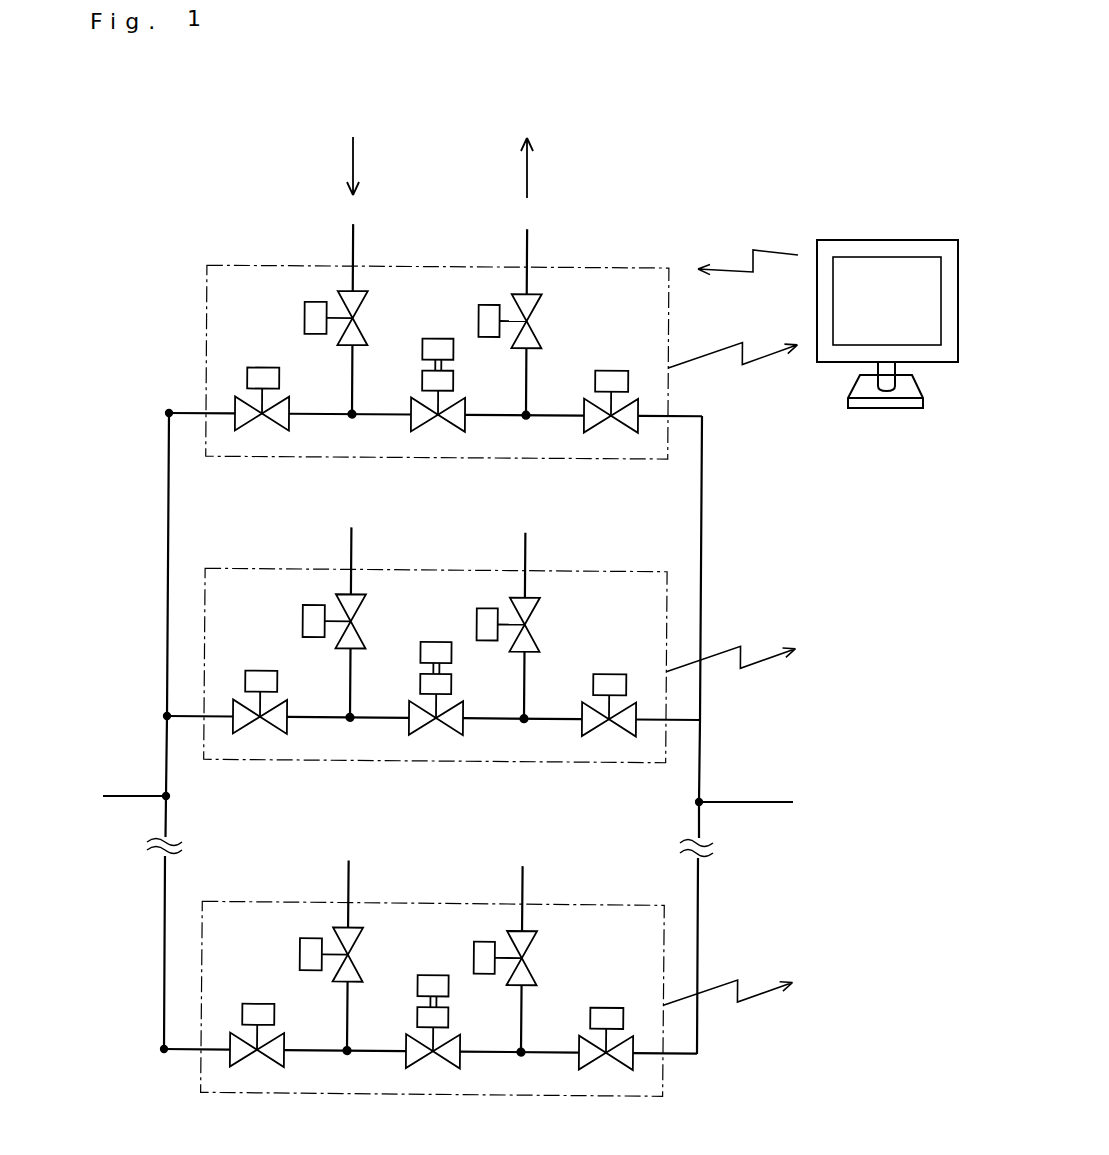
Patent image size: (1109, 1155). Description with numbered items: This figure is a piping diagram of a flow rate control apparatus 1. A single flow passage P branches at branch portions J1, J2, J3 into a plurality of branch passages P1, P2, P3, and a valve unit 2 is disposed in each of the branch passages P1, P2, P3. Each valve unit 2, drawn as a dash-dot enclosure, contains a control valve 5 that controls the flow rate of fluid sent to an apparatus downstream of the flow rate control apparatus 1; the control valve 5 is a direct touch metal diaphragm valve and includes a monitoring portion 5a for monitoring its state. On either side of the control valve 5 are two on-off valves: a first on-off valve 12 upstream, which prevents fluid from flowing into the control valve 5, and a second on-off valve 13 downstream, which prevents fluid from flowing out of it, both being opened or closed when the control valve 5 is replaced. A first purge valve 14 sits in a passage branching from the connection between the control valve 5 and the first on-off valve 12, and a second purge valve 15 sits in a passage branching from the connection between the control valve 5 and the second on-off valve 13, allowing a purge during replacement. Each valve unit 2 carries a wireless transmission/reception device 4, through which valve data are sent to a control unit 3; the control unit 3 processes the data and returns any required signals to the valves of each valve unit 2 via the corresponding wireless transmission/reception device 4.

The flow rate control apparatus 1 is at (812, 104).
The valve unit 2 is at (439, 644).
The control unit 3 is at (912, 240).
The wireless transmission/reception device 4 is at (707, 353).
The control valve 5 is at (435, 769).
The monitoring portion 5a is at (427, 647).
The first on-off valve 12 is at (259, 757).
The second on-off valve 13 is at (608, 763).
The first purge valve 14 is at (334, 592).
The second purge valve 15 is at (508, 596).
The flow passage P is at (140, 795).
The branch passage P1 is at (201, 461).
The branch passage P2 is at (199, 765).
The branch passage P3 is at (195, 1098).
The branch portion J1 is at (169, 413).
The branch portion J2 is at (165, 713).
The branch portion J3 is at (160, 1053).